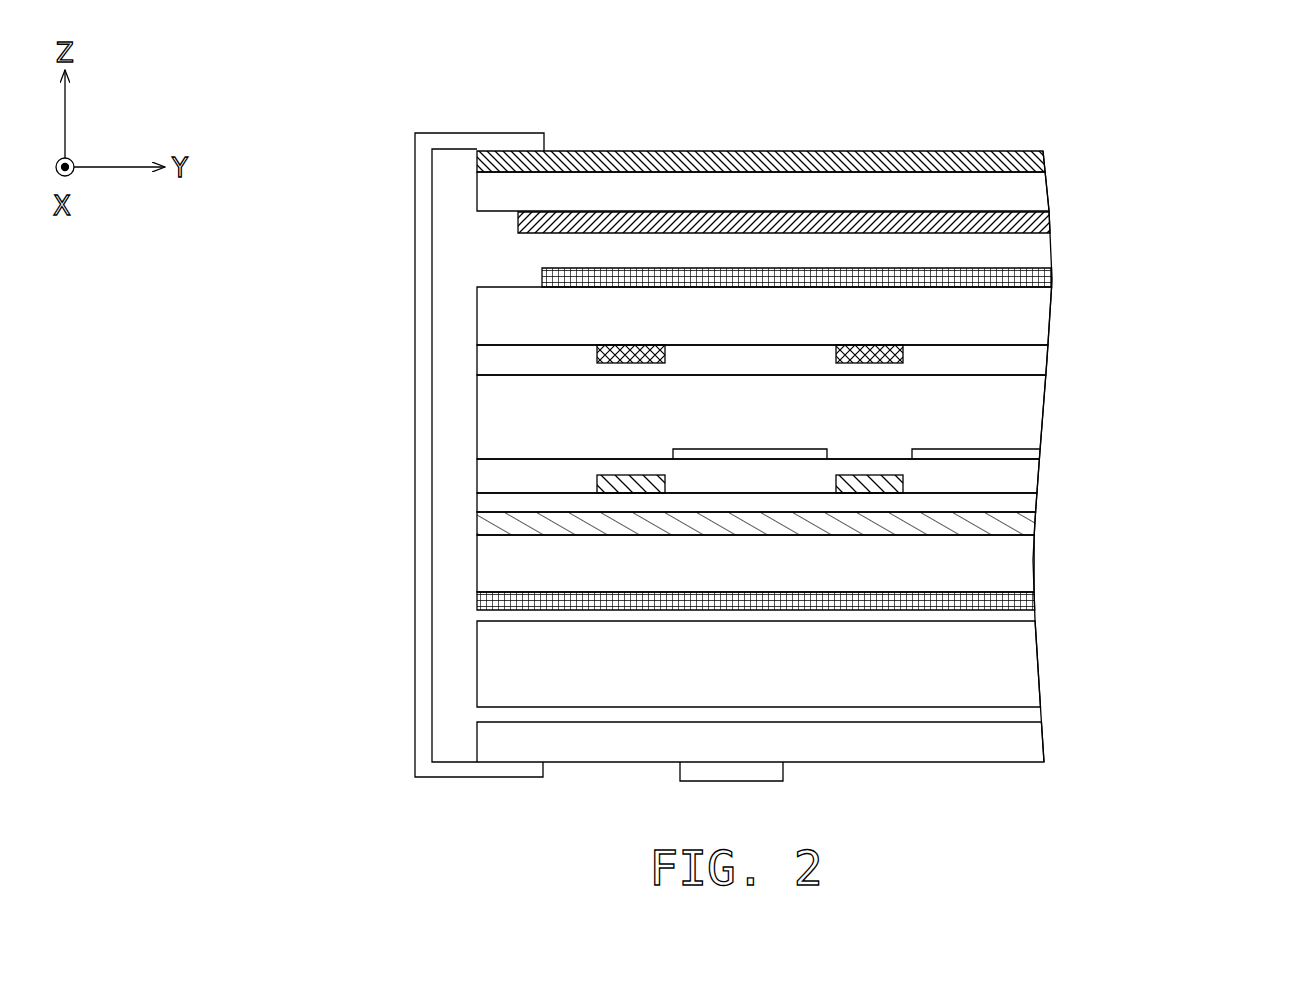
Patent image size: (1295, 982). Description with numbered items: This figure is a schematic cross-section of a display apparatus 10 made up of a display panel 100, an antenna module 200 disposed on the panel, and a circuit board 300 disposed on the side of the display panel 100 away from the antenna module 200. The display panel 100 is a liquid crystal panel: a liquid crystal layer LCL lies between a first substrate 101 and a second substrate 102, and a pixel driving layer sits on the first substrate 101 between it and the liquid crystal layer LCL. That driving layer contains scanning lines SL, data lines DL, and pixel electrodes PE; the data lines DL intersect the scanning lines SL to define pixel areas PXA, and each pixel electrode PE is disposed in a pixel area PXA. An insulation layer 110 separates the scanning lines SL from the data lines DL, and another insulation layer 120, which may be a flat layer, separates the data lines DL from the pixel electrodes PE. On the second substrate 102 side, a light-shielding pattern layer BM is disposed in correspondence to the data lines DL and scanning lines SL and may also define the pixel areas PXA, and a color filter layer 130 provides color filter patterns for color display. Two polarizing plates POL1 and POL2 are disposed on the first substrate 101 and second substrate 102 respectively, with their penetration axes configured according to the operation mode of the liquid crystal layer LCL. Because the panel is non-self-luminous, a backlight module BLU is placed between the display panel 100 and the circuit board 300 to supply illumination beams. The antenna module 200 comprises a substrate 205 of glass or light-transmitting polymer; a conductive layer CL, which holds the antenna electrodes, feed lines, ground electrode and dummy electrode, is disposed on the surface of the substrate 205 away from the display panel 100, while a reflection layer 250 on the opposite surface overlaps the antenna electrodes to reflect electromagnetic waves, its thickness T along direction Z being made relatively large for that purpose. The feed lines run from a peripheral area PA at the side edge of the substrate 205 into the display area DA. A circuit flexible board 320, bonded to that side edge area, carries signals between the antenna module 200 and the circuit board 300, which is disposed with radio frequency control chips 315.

The display apparatus 10 is at (797, 443).
The display panel 100 is at (797, 440).
The first substrate 101 is at (1022, 558).
The second substrate 102 is at (1043, 323).
The insulation layer 110 is at (1027, 500).
The insulation layer 120 is at (1023, 472).
The color filter layer 130 is at (1038, 358).
The antenna module 200 is at (843, 170).
The substrate 205 is at (1032, 189).
The reflection layer 250 is at (852, 222).
The circuit board 300 is at (1022, 738).
The control chip 315 is at (775, 773).
The circuit flexible board 320 is at (422, 412).
The conductive layer CL is at (1023, 158).
The thickness T is at (1077, 222).
The polarizing plate POL1 is at (819, 589).
The polarizing plate POL2 is at (1035, 277).
The liquid crystal layer LCL is at (1037, 417).
The light-shielding pattern layer BM is at (883, 345).
The pixel electrode PE is at (755, 453).
The data line DL is at (635, 477).
The scanning line SL is at (480, 527).
The backlight module BLU is at (1023, 658).
The pixel area PXA is at (835, 340).
The peripheral area PA is at (580, 86).
The display area DA is at (1046, 86).